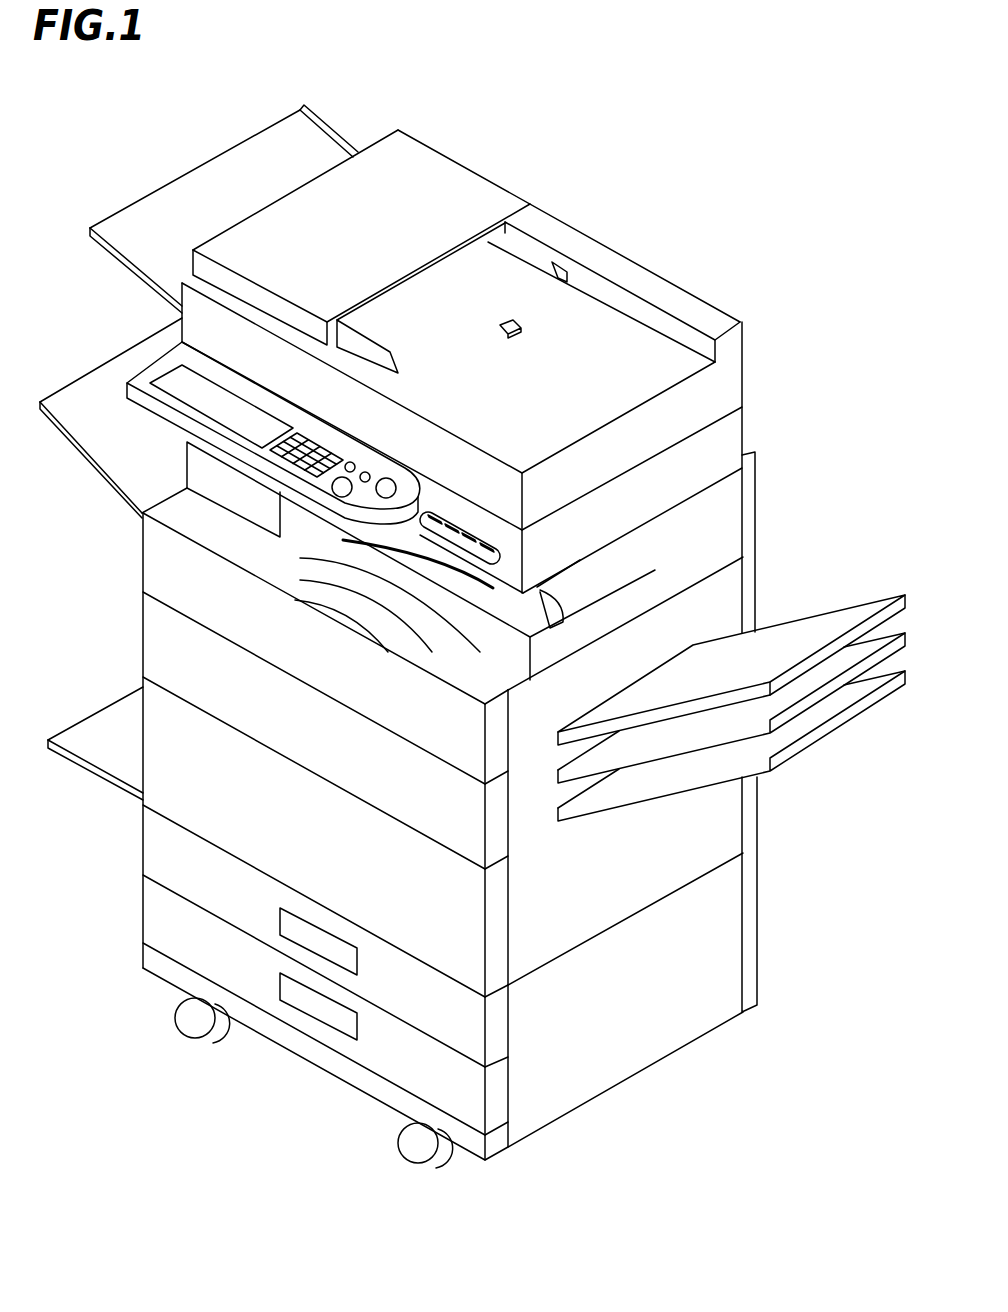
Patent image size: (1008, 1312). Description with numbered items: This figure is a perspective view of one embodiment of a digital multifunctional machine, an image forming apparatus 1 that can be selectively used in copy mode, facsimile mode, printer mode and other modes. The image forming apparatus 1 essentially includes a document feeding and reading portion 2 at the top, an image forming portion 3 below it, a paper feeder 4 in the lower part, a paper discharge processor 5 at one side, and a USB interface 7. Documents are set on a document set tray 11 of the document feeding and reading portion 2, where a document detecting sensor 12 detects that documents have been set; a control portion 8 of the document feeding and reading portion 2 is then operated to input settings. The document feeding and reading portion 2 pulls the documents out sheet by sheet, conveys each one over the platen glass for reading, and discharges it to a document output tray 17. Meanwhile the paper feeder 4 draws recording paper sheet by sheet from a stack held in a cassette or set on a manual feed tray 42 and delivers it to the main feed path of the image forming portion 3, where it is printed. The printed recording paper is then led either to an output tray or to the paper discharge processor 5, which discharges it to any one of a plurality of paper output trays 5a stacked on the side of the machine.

The image forming apparatus 1 is at (692, 72).
The document feeding and reading portion 2 is at (767, 330).
The image forming portion 3 is at (130, 626).
The paper feeder 4 is at (130, 890).
The paper discharge processor 5 is at (813, 593).
The paper output trays 5a is at (867, 625).
The USB interface 7 is at (450, 556).
The control portion 8 is at (163, 405).
The document set tray 11 is at (540, 307).
The document detecting sensor 12 is at (508, 342).
The document output tray 17 is at (333, 137).
The manual feed tray 42 is at (105, 717).